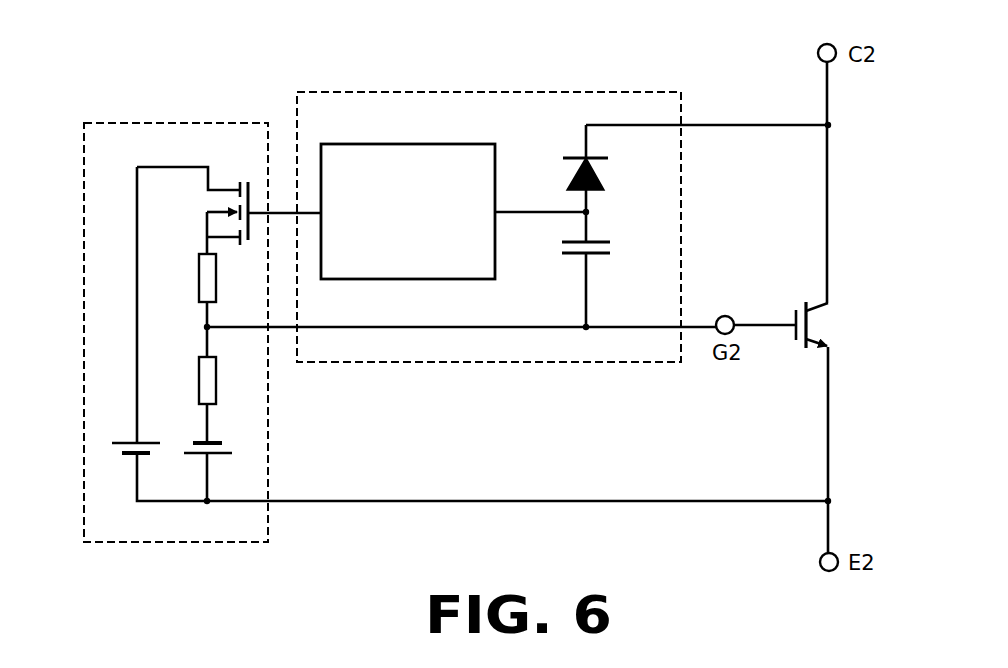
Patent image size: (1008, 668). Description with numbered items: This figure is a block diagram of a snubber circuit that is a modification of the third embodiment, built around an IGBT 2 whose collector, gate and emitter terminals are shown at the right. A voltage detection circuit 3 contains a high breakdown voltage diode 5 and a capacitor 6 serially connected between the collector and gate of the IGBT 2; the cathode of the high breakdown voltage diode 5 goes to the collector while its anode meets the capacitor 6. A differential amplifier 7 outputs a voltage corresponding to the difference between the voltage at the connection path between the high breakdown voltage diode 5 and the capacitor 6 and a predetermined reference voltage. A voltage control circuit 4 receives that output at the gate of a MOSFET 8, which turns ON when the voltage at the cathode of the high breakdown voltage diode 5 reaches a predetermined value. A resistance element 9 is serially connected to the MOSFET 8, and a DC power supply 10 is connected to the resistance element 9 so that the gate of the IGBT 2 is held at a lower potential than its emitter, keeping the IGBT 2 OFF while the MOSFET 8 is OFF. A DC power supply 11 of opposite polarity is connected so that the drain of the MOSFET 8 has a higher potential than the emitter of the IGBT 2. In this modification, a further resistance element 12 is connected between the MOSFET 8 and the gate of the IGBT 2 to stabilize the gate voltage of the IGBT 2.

The IGBT 2 is at (828, 322).
The voltage detection circuit 3 is at (570, 102).
The voltage control circuit 4 is at (210, 140).
The high breakdown voltage diode 5 is at (603, 172).
The capacitor 6 is at (603, 258).
The differential amplifier 7 is at (497, 165).
The MOSFET 8 is at (210, 203).
The resistance element 9 is at (198, 375).
The DC power supply 10 is at (243, 440).
The DC power supply 11 is at (105, 445).
The resistance element 12 is at (198, 272).